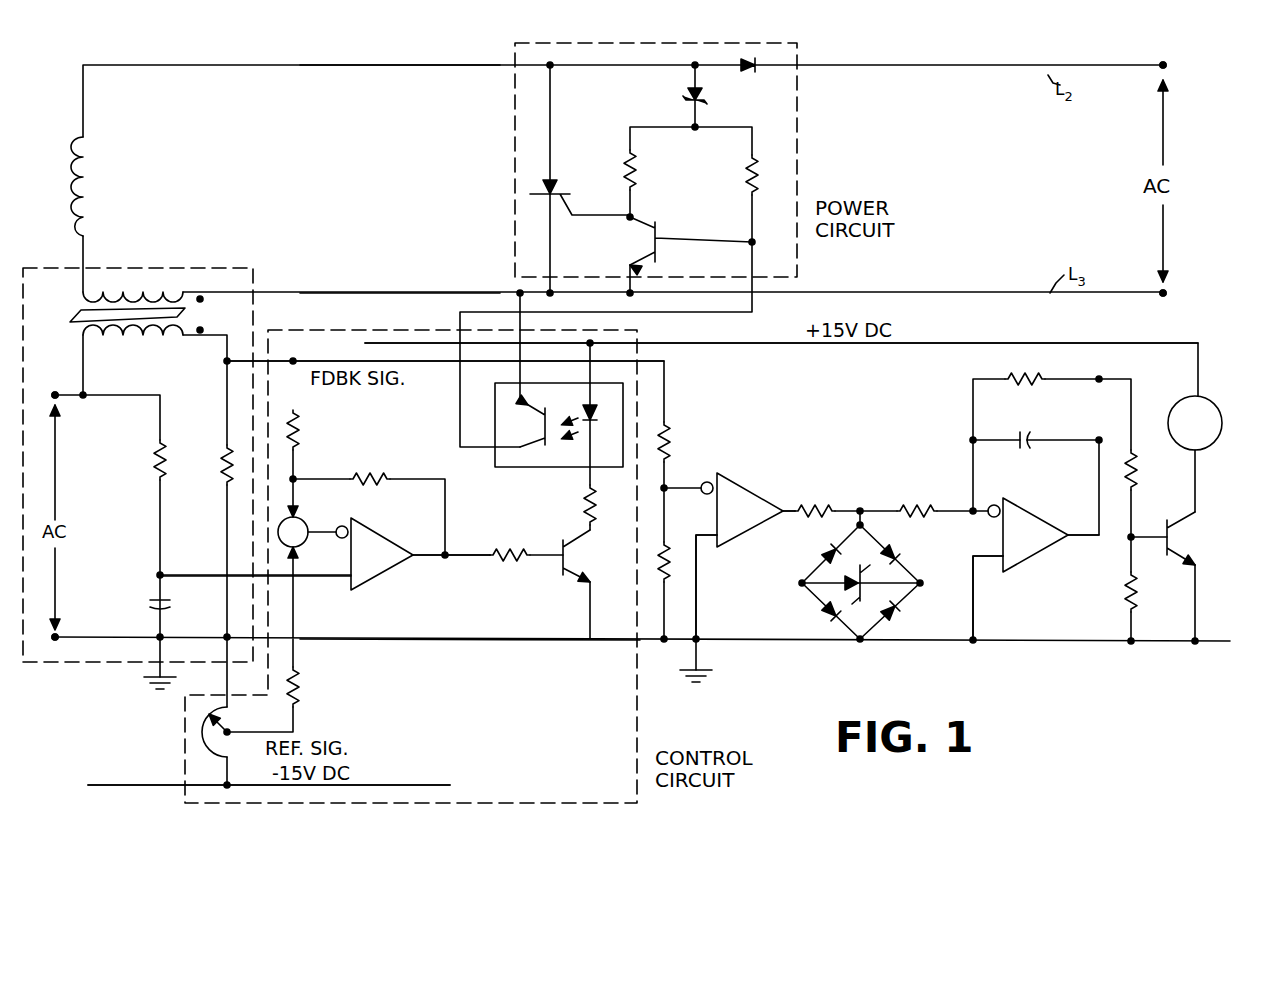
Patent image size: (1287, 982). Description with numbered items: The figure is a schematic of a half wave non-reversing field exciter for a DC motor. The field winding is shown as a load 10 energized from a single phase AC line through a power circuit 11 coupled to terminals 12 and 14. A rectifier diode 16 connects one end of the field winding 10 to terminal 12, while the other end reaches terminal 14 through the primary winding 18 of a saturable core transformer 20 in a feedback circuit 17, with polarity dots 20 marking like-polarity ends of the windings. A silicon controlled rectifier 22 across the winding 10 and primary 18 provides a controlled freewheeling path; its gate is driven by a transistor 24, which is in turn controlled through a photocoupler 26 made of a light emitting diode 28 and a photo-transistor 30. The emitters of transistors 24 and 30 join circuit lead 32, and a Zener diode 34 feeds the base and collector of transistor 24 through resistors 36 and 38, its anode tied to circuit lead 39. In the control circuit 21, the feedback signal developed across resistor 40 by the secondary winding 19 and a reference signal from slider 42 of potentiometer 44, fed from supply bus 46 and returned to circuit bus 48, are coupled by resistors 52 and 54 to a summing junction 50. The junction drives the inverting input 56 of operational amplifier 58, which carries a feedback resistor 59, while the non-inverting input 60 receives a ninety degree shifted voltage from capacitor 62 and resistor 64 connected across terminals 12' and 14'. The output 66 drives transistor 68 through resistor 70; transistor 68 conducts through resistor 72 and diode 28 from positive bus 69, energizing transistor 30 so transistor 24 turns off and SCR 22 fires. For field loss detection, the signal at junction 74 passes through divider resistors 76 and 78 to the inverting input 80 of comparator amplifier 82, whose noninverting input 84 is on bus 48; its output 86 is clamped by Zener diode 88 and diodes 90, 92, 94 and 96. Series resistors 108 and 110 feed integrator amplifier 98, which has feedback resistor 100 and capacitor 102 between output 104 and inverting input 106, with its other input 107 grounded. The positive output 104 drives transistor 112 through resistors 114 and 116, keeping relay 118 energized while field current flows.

The field winding 10 is at (67, 149).
The power circuit 11 is at (798, 165).
The terminal 12 is at (1186, 66).
The terminal 14 is at (1188, 293).
The semiconductor diode 16 is at (746, 78).
The feedback circuit 17 is at (269, 254).
The primary winding 18 is at (78, 298).
The secondary winding 19 is at (76, 341).
The saturable core transformer 20 is at (198, 322).
The control circuit 21 is at (348, 330).
The silicon controlled rectifier 22 is at (580, 178).
The transistor 24 is at (640, 239).
The photocoupler 26 is at (538, 471).
The light emitting diode 28 is at (578, 414).
The photo-transistor 30 is at (541, 431).
The circuit lead 32 is at (391, 293).
The Zener diode 34 is at (680, 88).
The fixed resistor 36 is at (740, 181).
The fixed resistor 38 is at (647, 167).
The circuit lead 39 is at (363, 66).
The fixed resistor 40 is at (210, 435).
The slider element 42 is at (225, 718).
The potentiometer 44 is at (199, 740).
The supply bus 46 is at (409, 784).
The circuit bus 48 is at (452, 638).
The summing junction 50 is at (308, 520).
The fixed resistor 52 is at (311, 430).
The fixed resistor 54 is at (302, 688).
The inverting input 56 is at (344, 543).
The operational amplifier 58 is at (420, 546).
The feedback resistor 59 is at (384, 471).
The non-inverting input 60 is at (349, 587).
The capacitor 62 is at (142, 598).
The fixed resistor 64 is at (140, 459).
The output 66 is at (417, 560).
The transistor 68 is at (585, 565).
The circuit bus 69 is at (792, 344).
The resistor 70 is at (521, 545).
The fixed resistor 72 is at (598, 501).
The circuit junction 74 is at (295, 360).
The resistor 76 is at (676, 441).
The resistor 78 is at (674, 584).
The inverting input 80 is at (708, 480).
The operational amplifier 82 is at (744, 481).
The noninverting input 84 is at (715, 530).
The output 86 is at (786, 514).
The Zener diode 88 is at (862, 568).
The diode 90 is at (825, 554).
The diode 92 is at (893, 548).
The diode 94 is at (825, 612).
The diode 96 is at (892, 613).
The operational amplifier 98 is at (1058, 525).
The feedback resistor 100 is at (1046, 382).
The integrator capacitor 102 is at (1032, 434).
The output 104 is at (1070, 539).
The inverting input 106 is at (994, 504).
The non-inverting input 107 is at (1003, 564).
The resistor 108 is at (820, 502).
The resistor 110 is at (915, 502).
The transistor 112 is at (1186, 531).
The resistor 114 is at (1130, 466).
The resistor 116 is at (1124, 599).
The relay 118 is at (1215, 402).
The AC terminal 12' is at (46, 386).
The AC terminal 14' is at (76, 625).